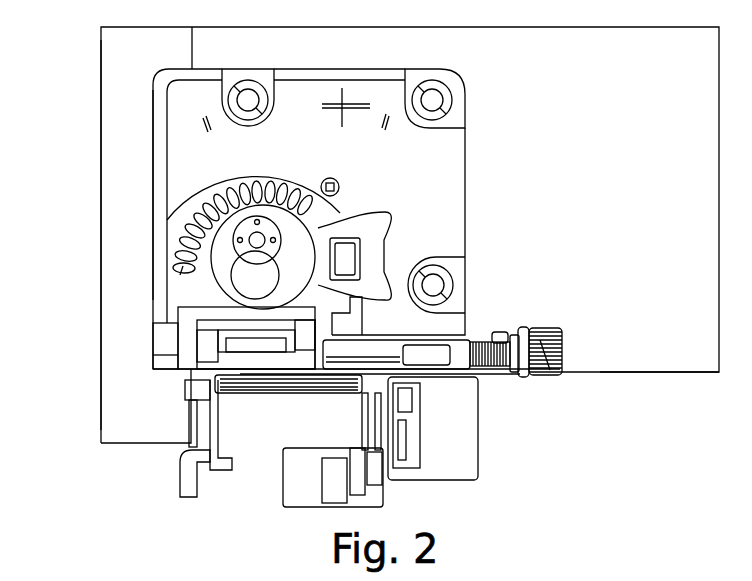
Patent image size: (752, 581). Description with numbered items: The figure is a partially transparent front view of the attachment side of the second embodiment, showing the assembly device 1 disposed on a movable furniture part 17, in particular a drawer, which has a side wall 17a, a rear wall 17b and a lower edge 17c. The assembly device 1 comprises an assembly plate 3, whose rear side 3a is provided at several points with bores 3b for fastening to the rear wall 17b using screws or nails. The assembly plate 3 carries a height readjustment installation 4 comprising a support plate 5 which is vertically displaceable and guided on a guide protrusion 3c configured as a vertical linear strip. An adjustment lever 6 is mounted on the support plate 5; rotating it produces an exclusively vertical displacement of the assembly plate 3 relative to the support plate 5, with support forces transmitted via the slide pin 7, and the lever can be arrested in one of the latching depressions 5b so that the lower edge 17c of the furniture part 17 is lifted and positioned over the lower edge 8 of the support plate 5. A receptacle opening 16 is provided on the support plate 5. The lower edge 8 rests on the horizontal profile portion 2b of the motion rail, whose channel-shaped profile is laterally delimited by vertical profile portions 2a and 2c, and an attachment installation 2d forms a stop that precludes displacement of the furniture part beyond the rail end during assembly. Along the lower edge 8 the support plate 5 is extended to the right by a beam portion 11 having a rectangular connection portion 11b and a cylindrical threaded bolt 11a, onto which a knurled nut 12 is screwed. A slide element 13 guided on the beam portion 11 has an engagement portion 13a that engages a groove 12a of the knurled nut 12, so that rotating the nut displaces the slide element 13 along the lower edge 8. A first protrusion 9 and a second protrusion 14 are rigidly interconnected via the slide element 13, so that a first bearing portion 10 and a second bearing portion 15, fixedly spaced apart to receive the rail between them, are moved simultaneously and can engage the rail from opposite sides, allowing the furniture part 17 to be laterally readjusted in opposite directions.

The assembly device 1 is at (144, 165).
The vertical profile portion 2a is at (220, 447).
The horizontal profile portion 2b is at (243, 388).
The vertical profile portion 2c is at (362, 428).
The attachment installation 2d is at (238, 356).
The assembly plate 3 is at (472, 147).
The rear side 3a is at (362, 162).
The bores 3b is at (248, 121).
The guide protrusion 3c is at (357, 324).
The height readjustment installation 4 is at (274, 168).
The support plate 5 is at (178, 228).
The latching depressions 5b is at (183, 266).
The adjustment lever 6 is at (386, 240).
The slide pin 7 is at (218, 283).
The lower edge 8 is at (319, 382).
The first protrusion 9 is at (186, 400).
The first bearing portion 10 is at (212, 378).
The beam portion 11 is at (464, 343).
The threaded bolt 11a is at (500, 331).
The connection portion 11b is at (437, 358).
The knurled nut 12 is at (572, 340).
The groove 12a is at (546, 364).
The slide element 13 is at (472, 372).
The engagement portion 13a is at (522, 330).
The second protrusion 14 is at (407, 427).
The second bearing portion 15 is at (440, 440).
The receptacle opening 16 is at (238, 328).
The furniture part 17 is at (97, 113).
The side wall 17a is at (101, 50).
The rear wall 17b is at (652, 88).
The lower edge 17c is at (650, 374).